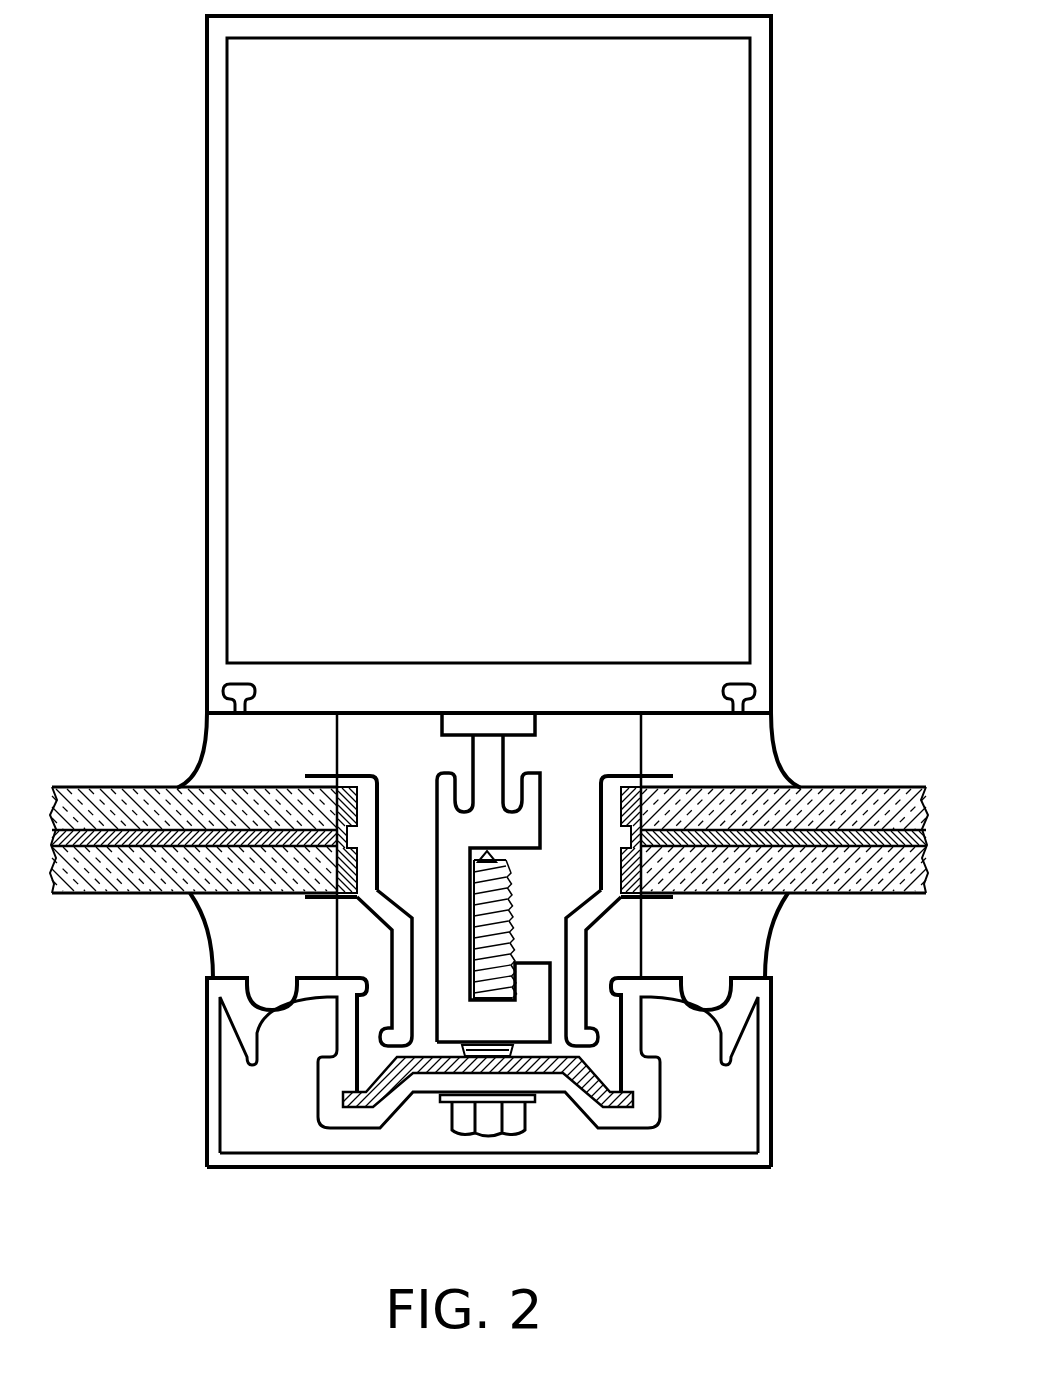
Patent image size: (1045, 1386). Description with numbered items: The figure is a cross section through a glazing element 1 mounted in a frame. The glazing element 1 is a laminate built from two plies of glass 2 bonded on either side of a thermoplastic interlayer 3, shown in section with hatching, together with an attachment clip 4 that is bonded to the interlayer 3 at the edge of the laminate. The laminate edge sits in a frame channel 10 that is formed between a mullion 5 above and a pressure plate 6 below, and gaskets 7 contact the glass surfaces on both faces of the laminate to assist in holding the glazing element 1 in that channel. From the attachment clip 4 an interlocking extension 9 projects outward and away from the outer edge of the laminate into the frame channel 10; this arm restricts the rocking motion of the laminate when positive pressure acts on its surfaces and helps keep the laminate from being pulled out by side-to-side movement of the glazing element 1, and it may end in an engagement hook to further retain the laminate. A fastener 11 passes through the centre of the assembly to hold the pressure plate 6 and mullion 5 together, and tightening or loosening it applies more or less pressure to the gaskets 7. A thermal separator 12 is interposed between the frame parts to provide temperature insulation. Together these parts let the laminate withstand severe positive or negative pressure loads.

The glazing element 1 is at (106, 704).
The glass 2 is at (170, 795).
The interlayer 3 is at (88, 850).
The attachment clip 4 is at (420, 912).
The mullion 5 is at (205, 472).
The pressure plate 6 is at (207, 1097).
The gaskets 7 is at (203, 748).
The interlocking extension 9 is at (423, 1022).
The frame channel 10 is at (574, 813).
The fastener 11 is at (517, 975).
The thermal separator 12 is at (370, 1075).